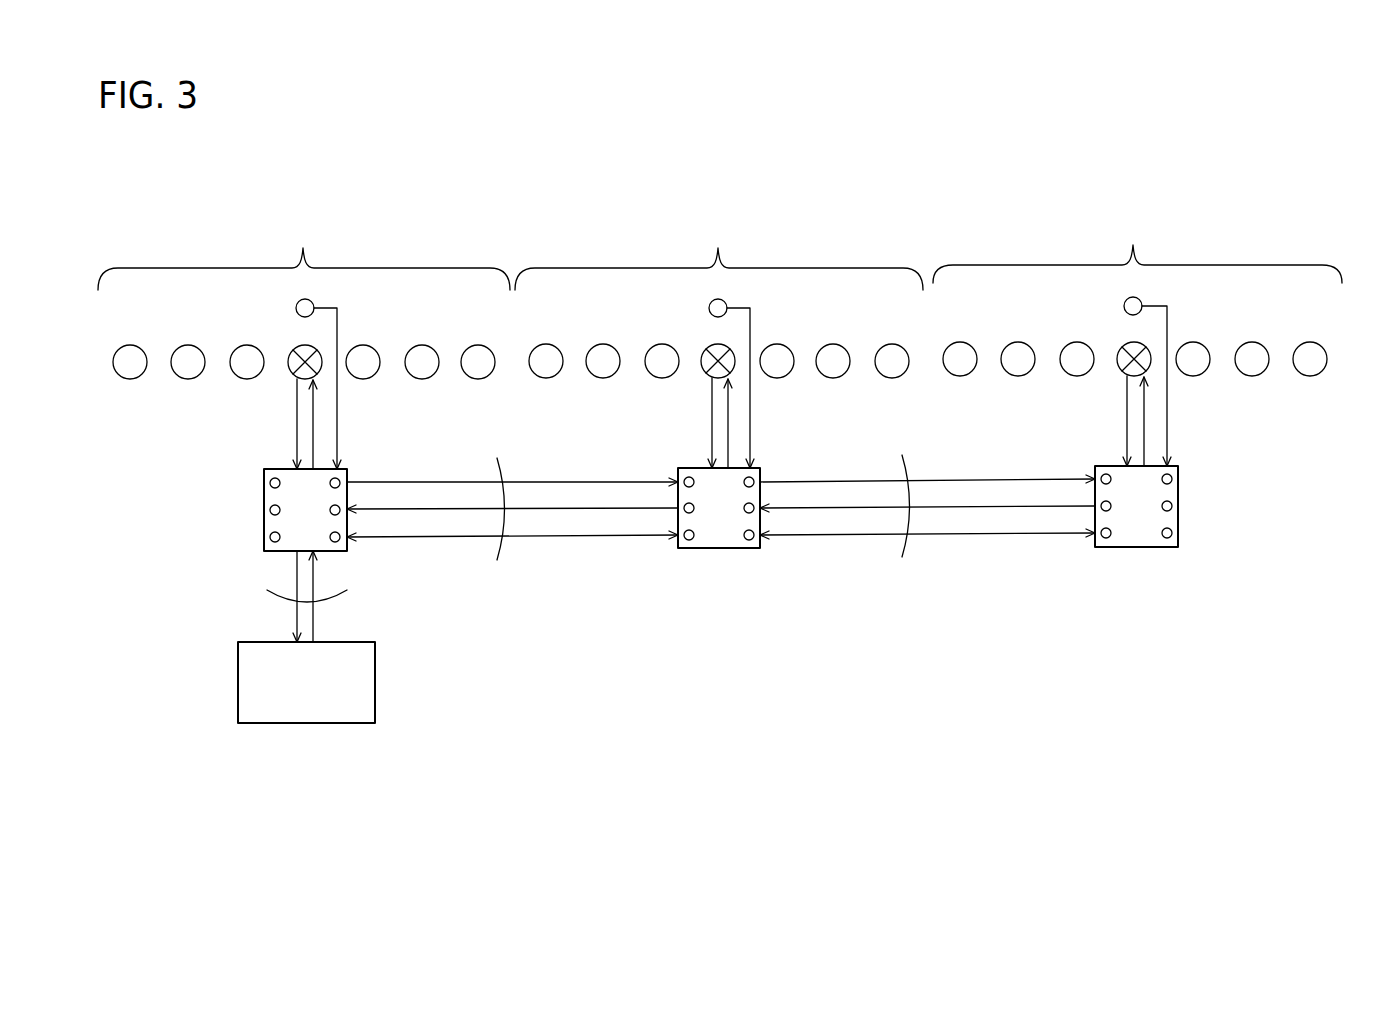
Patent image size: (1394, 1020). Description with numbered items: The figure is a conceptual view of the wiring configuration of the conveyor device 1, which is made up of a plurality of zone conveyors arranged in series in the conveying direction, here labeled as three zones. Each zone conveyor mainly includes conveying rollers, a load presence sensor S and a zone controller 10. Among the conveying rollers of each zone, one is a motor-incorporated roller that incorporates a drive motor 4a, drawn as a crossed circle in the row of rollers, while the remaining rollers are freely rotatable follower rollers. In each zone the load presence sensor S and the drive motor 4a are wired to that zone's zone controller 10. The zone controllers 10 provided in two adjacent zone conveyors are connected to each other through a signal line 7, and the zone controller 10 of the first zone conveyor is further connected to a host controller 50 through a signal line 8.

The conveyor device 1 is at (1350, 248).
The drive motor 4a is at (295, 377).
The signal line 7 is at (503, 549).
The signal line 8 is at (335, 600).
The zone controller 10 is at (263, 510).
The host controller 50 is at (310, 723).
The load presence sensor S is at (296, 308).